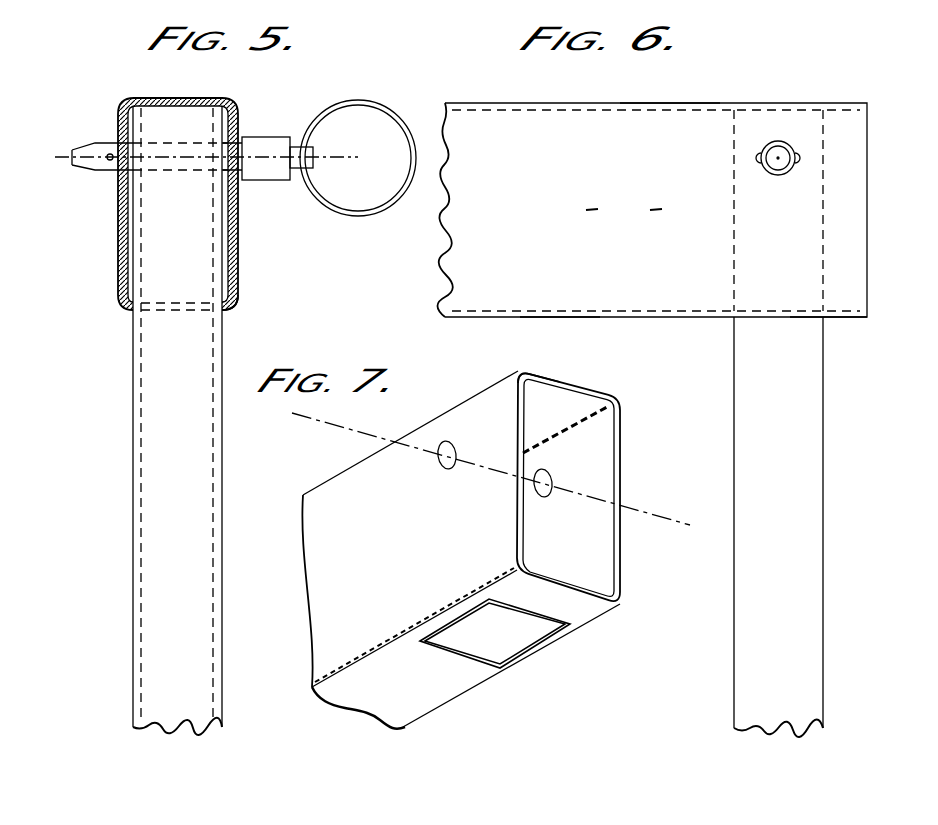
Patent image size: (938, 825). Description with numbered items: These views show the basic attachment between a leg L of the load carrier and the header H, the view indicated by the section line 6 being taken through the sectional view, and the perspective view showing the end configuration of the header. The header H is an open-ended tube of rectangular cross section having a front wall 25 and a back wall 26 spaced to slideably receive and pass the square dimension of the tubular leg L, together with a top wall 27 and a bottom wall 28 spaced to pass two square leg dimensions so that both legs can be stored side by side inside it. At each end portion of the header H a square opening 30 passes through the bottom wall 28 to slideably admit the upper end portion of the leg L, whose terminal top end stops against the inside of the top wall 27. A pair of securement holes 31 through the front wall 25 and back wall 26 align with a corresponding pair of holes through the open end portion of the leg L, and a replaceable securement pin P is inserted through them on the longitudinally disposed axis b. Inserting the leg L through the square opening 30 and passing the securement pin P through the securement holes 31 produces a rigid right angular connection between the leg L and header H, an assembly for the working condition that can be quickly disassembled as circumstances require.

In FIG. 5, the section line 6— 6 is at (96, 46).
In FIG. 5, the front wall 25 is at (240, 222).
In FIG. 7, the front wall 25 is at (330, 583).
In FIG. 5, the back wall 26 is at (118, 226).
In FIG. 6, the back wall 26 is at (624, 214).
In FIG. 7, the back wall 26 is at (620, 476).
In FIG. 5, the top wall 27 is at (189, 98).
In FIG. 6, the top wall 27 is at (661, 102).
In FIG. 7, the top wall 27 is at (549, 372).
In FIG. 5, the bottom wall 28 is at (137, 312).
In FIG. 6, the bottom wall 28 is at (558, 318).
In FIG. 5, the square opening 30 is at (200, 312).
In FIG. 6, the square opening 30 is at (800, 320).
In FIG. 7, the square opening 30 is at (511, 641).
In FIG. 7, the securement holes 31 is at (446, 470).
In FIG. 5, the axis b is at (186, 160).
In FIG. 7, the axis b is at (383, 437).
In FIG. 5, the securement pin P is at (279, 137).
In FIG. 6, the securement pin P is at (775, 175).
In FIG. 5, the leg L is at (122, 485).
In FIG. 6, the leg L is at (734, 417).
In FIG. 6, the header H is at (556, 97).
In FIG. 7, the header H is at (345, 475).